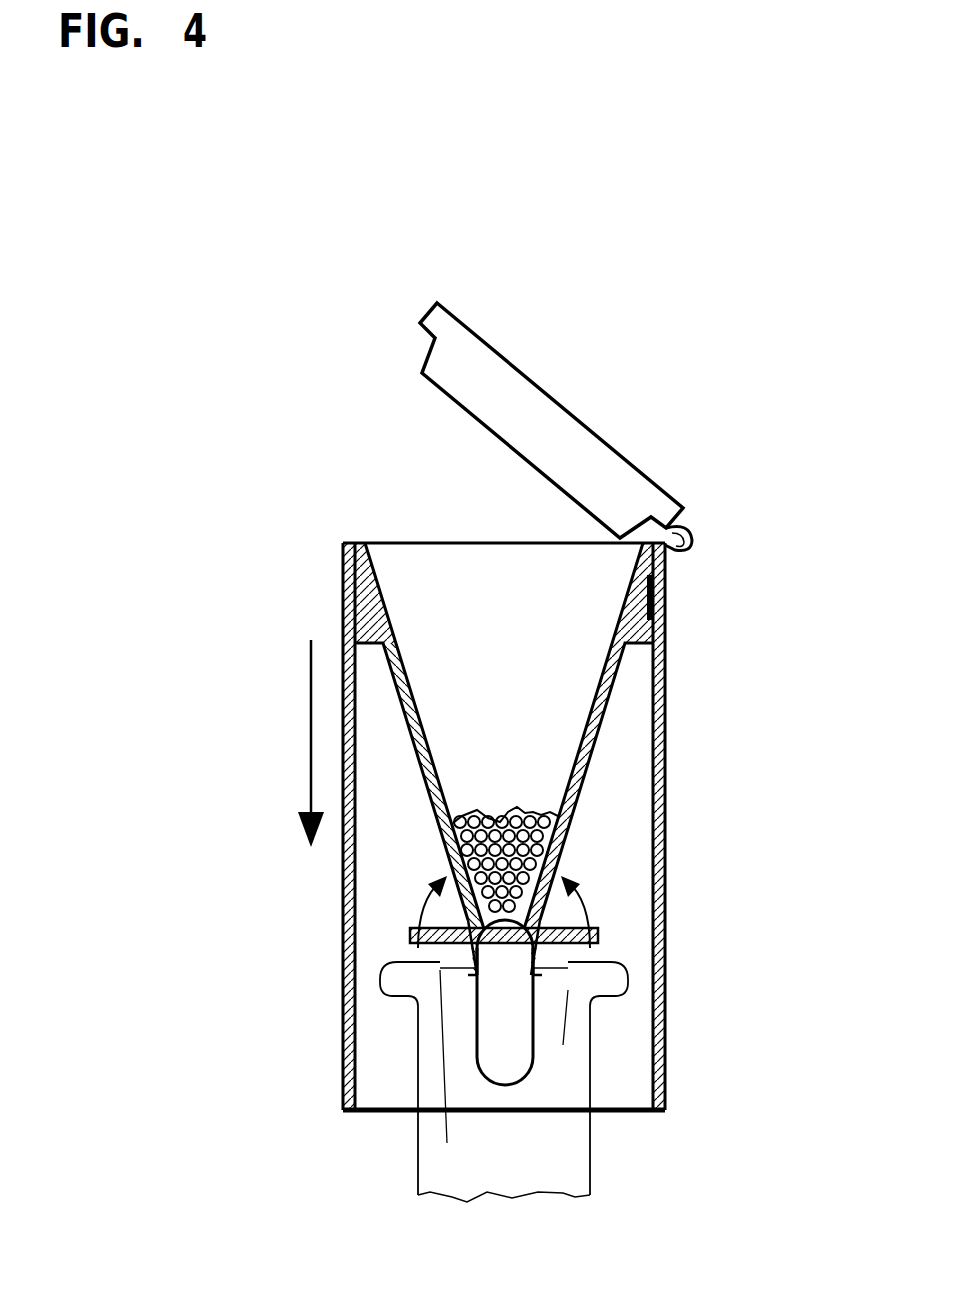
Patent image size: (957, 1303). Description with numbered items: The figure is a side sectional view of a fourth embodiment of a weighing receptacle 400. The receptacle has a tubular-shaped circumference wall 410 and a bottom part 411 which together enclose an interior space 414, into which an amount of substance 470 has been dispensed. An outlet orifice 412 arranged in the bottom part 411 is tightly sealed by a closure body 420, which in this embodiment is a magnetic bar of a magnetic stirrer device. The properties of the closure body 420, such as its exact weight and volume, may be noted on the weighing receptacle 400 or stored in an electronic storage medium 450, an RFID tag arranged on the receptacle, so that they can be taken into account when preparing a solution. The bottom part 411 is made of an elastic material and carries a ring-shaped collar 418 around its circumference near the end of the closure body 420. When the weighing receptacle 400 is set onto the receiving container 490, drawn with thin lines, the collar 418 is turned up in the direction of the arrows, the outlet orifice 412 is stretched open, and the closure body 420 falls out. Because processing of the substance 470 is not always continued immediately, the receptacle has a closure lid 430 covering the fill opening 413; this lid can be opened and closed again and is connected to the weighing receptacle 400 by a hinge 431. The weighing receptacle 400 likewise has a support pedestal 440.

The weighing receptacle 400 is at (681, 412).
The circumference wall 410 is at (590, 762).
The bottom part 411 is at (535, 953).
The outlet orifice 412 is at (460, 984).
The fill opening 413 is at (473, 543).
The interior space 414 is at (497, 752).
The ring-shaped collar 418 is at (598, 937).
The closure body 420 is at (503, 1010).
The closure lid 430 is at (536, 402).
The hinge 431 is at (693, 528).
The support pedestal 440 is at (350, 938).
The electronic storage medium 450 is at (660, 597).
The amount of substance 470 is at (532, 834).
The receiving container 490 is at (575, 1148).